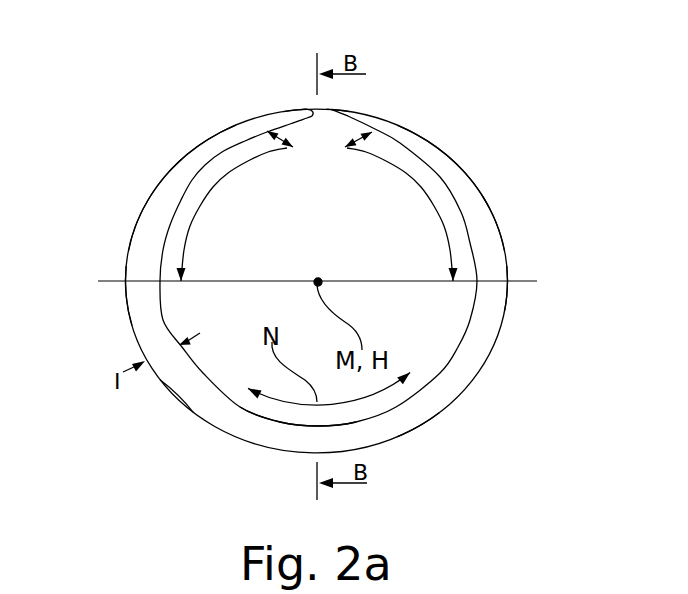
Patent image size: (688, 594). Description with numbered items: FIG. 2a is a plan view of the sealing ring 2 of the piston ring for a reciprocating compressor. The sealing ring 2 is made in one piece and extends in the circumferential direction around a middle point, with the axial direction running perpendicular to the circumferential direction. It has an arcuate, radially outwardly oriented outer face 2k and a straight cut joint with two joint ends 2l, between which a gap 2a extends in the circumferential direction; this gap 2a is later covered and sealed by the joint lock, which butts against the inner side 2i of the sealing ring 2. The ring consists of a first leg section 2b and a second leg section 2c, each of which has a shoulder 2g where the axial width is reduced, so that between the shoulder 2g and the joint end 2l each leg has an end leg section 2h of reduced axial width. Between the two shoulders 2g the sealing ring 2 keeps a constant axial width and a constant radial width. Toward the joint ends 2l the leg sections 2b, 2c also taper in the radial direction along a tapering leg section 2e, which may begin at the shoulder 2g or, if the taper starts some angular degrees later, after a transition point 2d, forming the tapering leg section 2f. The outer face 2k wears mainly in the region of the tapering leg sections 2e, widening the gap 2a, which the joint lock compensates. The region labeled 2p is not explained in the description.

The sealing ring 2 is at (498, 238).
The joint ends 2l is at (312, 110).
The gap 2a is at (321, 108).
The tapering leg section 2e is at (214, 131).
The end leg section 2h is at (386, 112).
The outer face 2k is at (160, 167).
The second leg section 2c is at (497, 210).
The first leg section 2b is at (140, 227).
The transition point 2d is at (500, 283).
The shoulder 2g is at (133, 285).
The inner side 2i is at (281, 141).
The tapering leg section 2f is at (211, 193).
The ring back 2p is at (318, 440).